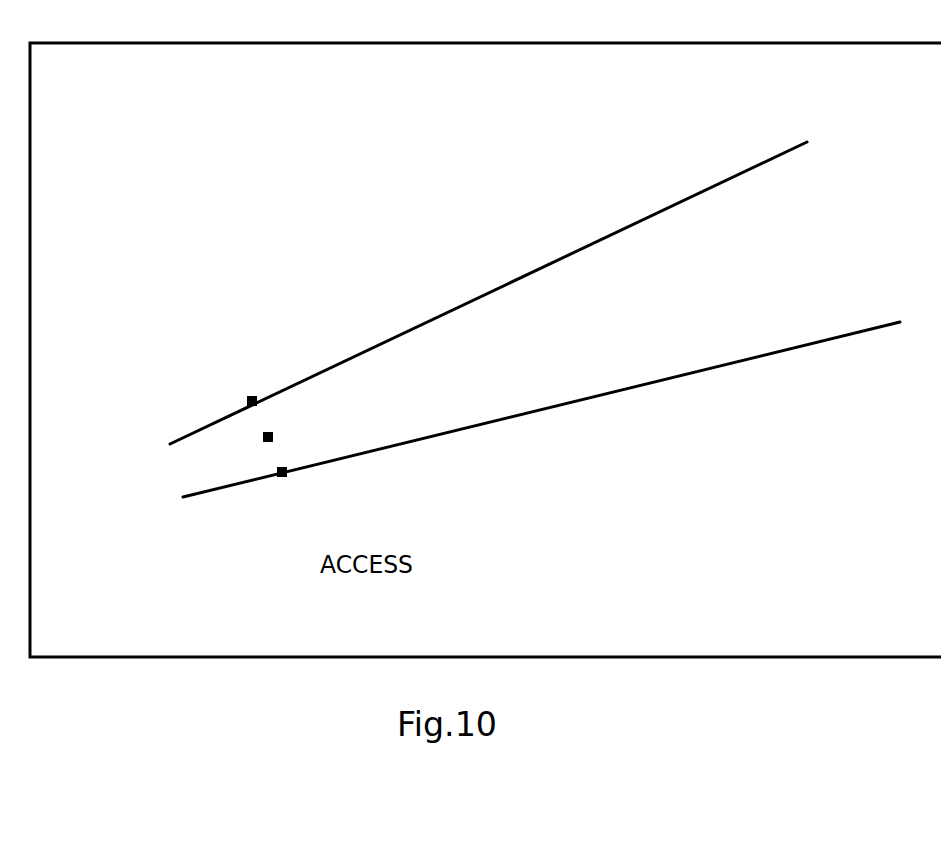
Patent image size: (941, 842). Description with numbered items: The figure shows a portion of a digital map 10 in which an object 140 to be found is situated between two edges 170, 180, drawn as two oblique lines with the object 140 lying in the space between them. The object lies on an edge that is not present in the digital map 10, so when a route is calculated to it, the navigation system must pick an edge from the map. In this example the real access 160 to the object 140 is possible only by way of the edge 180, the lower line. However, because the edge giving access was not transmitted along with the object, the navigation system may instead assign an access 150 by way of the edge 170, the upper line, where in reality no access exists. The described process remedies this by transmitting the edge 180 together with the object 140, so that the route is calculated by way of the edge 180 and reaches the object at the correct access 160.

The digital map 10 is at (921, 108).
The object 140 is at (273, 436).
The access 150 is at (252, 396).
The access 160 is at (283, 478).
The edge 170 is at (485, 293).
The edge 180 is at (583, 401).